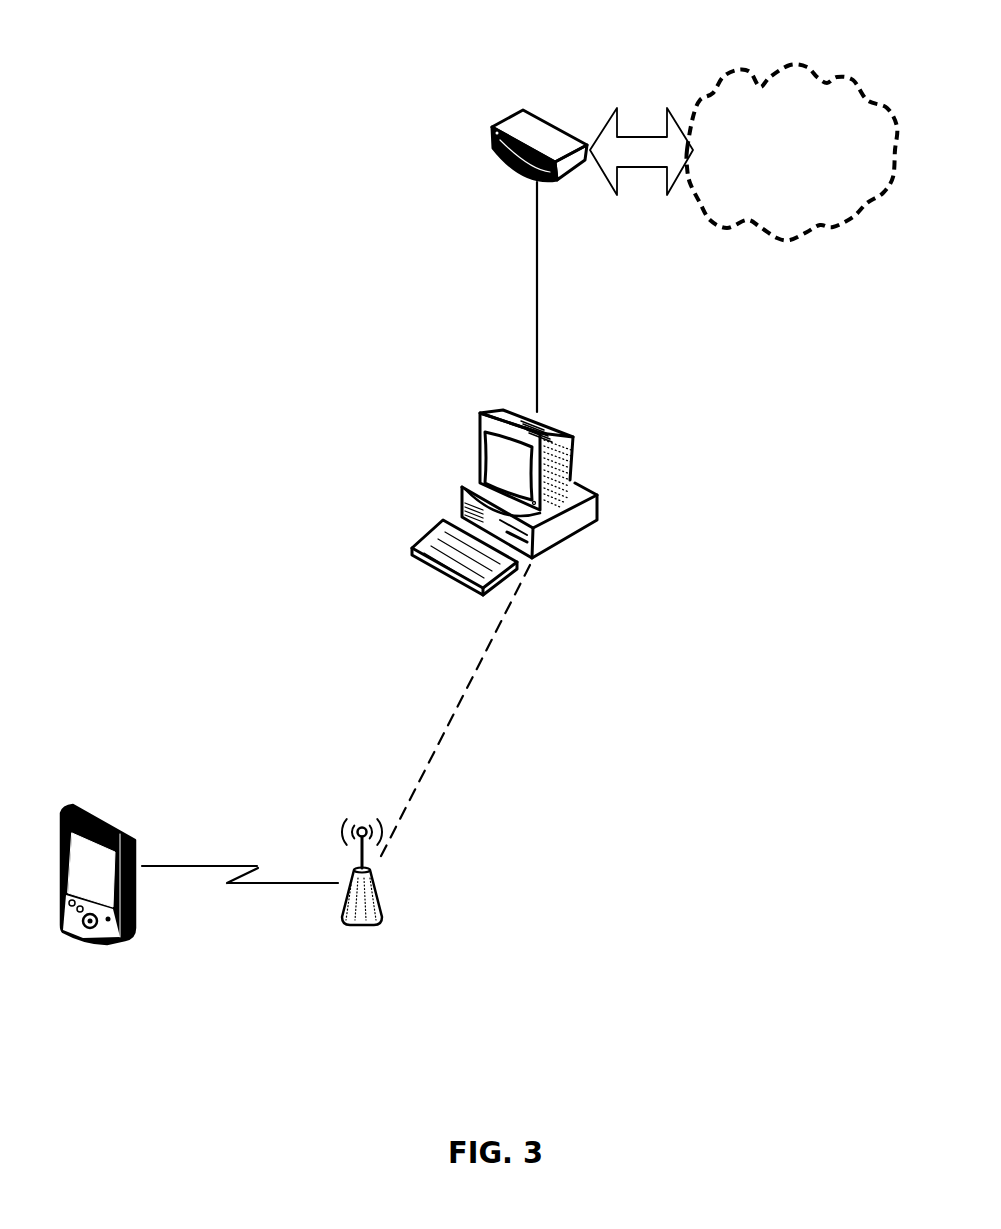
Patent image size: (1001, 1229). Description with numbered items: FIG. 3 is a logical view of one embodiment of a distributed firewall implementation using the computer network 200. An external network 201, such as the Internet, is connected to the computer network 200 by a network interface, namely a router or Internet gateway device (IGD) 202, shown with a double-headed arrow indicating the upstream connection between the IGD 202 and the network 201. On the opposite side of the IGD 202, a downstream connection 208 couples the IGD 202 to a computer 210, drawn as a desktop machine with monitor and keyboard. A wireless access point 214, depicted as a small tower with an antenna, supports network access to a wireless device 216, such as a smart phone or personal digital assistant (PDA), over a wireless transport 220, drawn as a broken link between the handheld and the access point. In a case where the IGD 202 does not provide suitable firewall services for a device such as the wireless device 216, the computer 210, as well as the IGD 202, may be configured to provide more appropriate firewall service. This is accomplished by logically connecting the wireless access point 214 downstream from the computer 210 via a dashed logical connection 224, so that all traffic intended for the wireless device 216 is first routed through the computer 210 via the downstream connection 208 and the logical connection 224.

The computer network 200 is at (258, 247).
The external network 201 is at (780, 250).
The Internet gateway device 202 is at (508, 118).
The second downstream connection 208 is at (537, 297).
The computer 210 is at (462, 487).
The wireless access point 214 is at (382, 910).
The wireless device 216 is at (100, 817).
The wireless transport 220 is at (302, 893).
The logical connection 224 is at (443, 715).